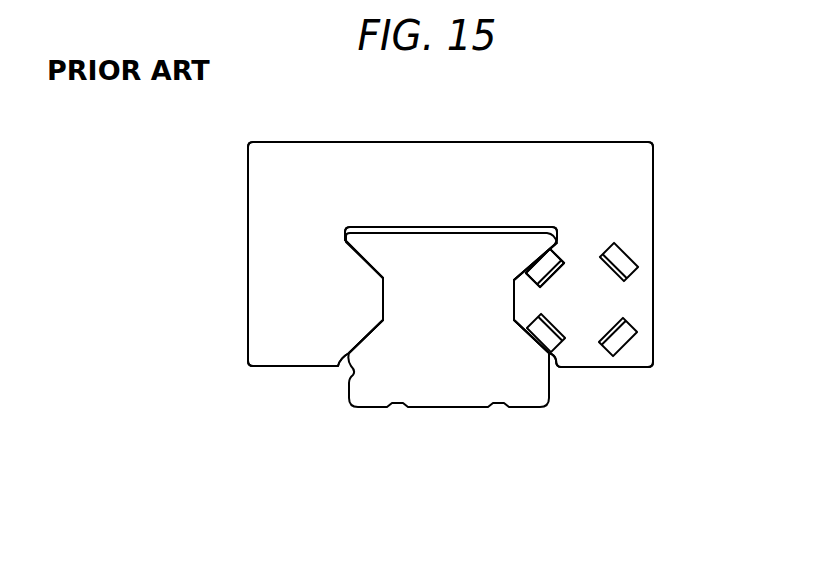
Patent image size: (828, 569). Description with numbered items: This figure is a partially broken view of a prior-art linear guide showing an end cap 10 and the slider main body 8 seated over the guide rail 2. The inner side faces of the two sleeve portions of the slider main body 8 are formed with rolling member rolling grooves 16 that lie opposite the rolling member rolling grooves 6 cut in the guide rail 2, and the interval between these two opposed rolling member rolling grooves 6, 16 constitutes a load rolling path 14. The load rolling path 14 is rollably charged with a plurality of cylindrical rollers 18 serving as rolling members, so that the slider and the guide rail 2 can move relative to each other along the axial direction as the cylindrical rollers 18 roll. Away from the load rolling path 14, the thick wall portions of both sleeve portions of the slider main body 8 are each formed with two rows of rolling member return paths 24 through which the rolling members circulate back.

The guide rail 2 is at (372, 418).
The rolling member rolling grooves 6 is at (544, 260).
The slider main body 8 is at (239, 279).
The end caps 10 is at (262, 210).
The load rolling path 14 is at (560, 93).
The rolling member rolling grooves 16 is at (556, 262).
The cylindrical rollers 18 is at (542, 335).
The rolling member return paths 24 is at (631, 249).